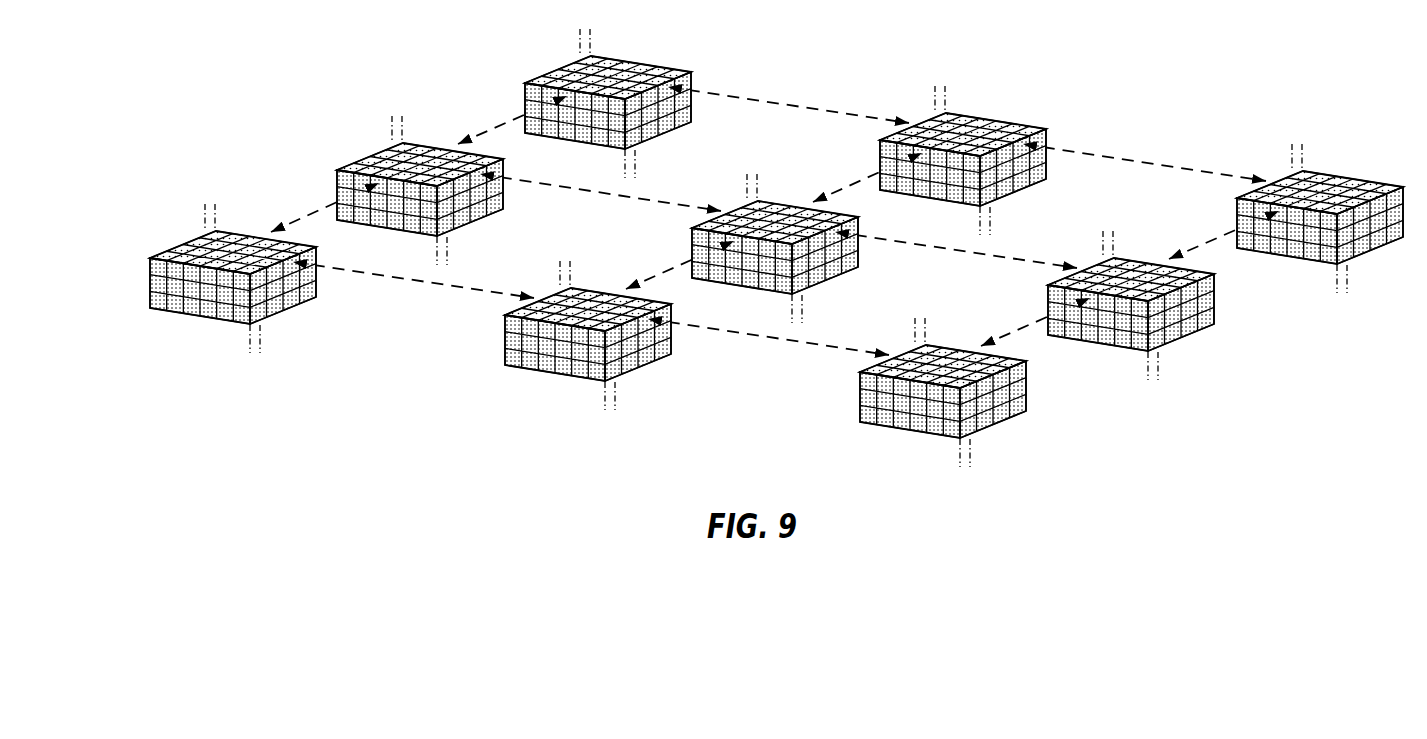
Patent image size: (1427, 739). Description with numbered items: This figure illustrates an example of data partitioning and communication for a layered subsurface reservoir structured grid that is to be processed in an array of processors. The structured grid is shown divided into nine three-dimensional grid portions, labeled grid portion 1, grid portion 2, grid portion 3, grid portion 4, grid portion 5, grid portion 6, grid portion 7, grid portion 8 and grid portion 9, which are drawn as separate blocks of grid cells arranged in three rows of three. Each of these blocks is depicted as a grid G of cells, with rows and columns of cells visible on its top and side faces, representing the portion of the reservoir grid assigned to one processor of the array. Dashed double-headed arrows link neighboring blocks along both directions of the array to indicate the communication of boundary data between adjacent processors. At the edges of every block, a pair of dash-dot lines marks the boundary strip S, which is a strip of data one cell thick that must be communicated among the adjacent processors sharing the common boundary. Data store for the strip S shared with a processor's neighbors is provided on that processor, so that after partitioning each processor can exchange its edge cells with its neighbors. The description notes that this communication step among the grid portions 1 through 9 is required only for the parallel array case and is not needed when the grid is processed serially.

The first grid block 1 is at (525, 105).
The second grid block 2 is at (880, 162).
The third grid block 3 is at (1237, 220).
The fourth grid block 4 is at (337, 192).
The fifth grid block 5 is at (692, 250).
The sixth grid block 6 is at (1048, 307).
The seventh grid block 7 is at (150, 280).
The eighth grid block 8 is at (505, 337).
The ninth grid block 9 is at (860, 394).
The grid of cells G is at (751, 248).
The boundary strip S is at (786, 236).